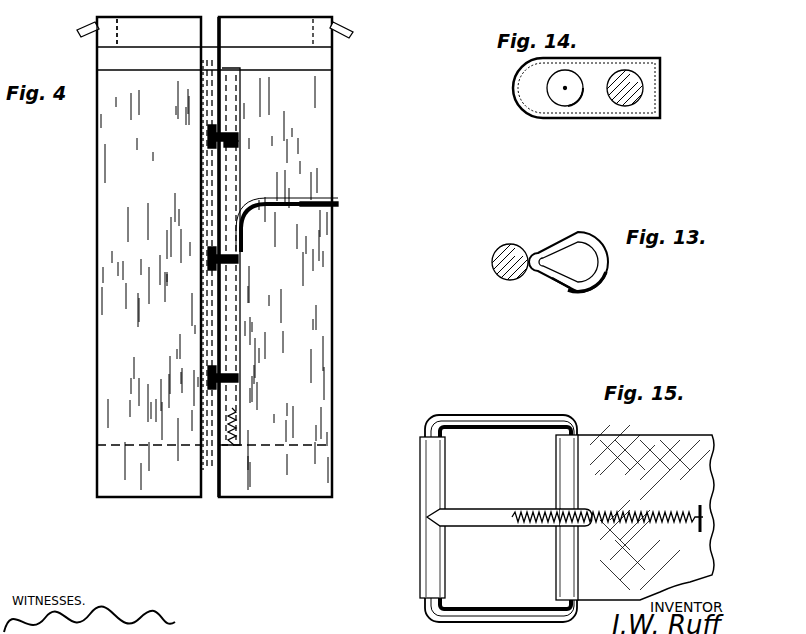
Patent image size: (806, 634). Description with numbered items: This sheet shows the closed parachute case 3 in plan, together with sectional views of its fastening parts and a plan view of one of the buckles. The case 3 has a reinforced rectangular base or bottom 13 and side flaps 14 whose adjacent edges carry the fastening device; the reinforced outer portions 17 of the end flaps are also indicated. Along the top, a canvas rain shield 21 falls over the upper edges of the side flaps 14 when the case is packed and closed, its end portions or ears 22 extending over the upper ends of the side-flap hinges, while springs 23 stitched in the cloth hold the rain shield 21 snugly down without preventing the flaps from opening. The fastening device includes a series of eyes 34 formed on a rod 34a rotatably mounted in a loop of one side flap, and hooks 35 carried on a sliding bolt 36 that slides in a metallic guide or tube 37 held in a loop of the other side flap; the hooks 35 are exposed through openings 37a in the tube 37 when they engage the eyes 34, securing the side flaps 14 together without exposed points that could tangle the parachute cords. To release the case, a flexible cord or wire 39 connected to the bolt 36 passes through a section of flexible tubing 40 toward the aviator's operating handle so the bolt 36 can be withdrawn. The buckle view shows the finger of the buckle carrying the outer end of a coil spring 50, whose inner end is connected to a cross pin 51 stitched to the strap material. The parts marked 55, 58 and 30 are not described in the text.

In FIG. 4, the case 3 is at (97, 200).
In FIG. 4, the rectangular base or bottom 13 is at (215, 412).
In FIG. 4, the side flaps 14 is at (222, 278).
In FIG. 4, the outer portions of end flaps 17 is at (2, 20).
In FIG. 4, the rain shield 21 is at (99, 32).
In FIG. 4, the end portions or ears of the rain shield 22 is at (343, 24).
In FIG. 4, the springs 23 is at (120, 26).
In FIG. 4, the eyes 34 is at (234, 143).
In FIG. 13, the eyes 34 is at (610, 270).
In FIG. 13, the rod 34a is at (500, 250).
In FIG. 14, the hooks 35 is at (564, 96).
In FIG. 14, the sliding bolt 36 is at (645, 92).
In FIG. 14, the metallic guide or tube 37 is at (640, 118).
In FIG. 4, the openings 37a is at (236, 133).
In FIG. 4, the flexible cord or wire 39 is at (312, 204).
In FIG. 4, the flexible tubing 40 is at (335, 208).
In FIG. 4, the knuckle 55 is at (240, 258).
In FIG. 4, the spring 58 is at (236, 430).
In FIG. 15, the buckle frame 30 is at (426, 616).
In FIG. 15, the coil spring 50 is at (531, 510).
In FIG. 15, the cross pin 51 is at (705, 523).